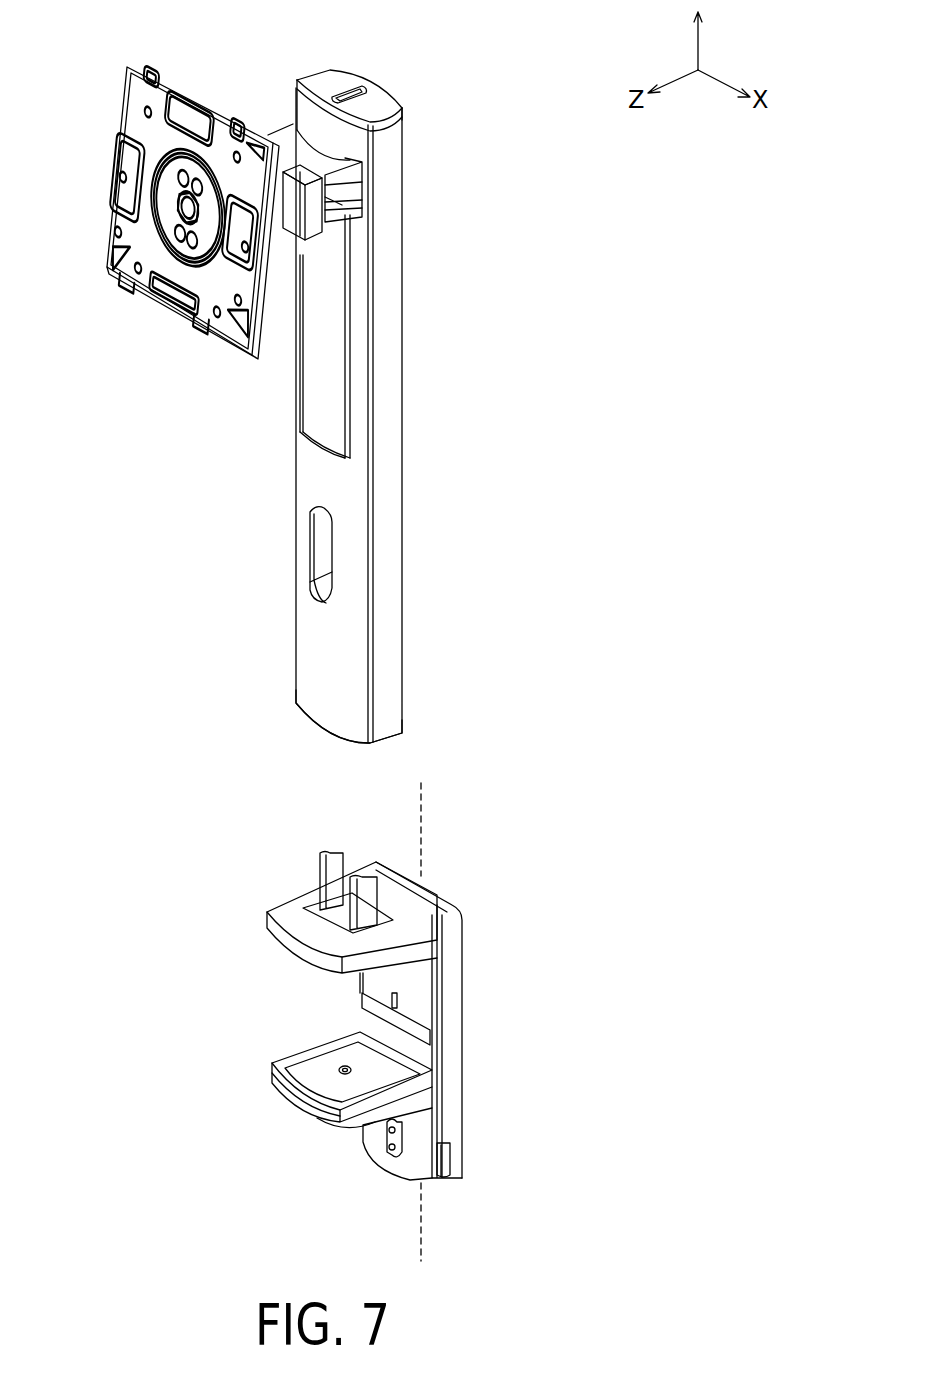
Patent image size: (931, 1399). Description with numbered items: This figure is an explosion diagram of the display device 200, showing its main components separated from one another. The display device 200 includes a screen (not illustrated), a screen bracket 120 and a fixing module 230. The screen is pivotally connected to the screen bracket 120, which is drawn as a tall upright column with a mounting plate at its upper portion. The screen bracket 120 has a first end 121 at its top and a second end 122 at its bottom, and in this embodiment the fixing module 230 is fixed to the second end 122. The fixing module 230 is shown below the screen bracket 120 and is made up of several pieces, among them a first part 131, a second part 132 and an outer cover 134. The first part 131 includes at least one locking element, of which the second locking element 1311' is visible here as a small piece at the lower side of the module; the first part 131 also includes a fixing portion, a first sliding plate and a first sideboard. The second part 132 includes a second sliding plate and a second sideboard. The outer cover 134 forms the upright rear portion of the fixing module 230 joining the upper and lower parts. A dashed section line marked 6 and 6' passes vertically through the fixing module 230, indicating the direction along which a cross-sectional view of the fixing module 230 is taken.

The display device 200 is at (388, 56).
The screen bracket 120 is at (388, 432).
The first end 121 is at (388, 135).
The second end 122 is at (388, 722).
The fixing module 230 is at (509, 924).
The second part 132 is at (281, 984).
The first part 131 is at (371, 1186).
The outer cover 134 is at (452, 1077).
The second locking element 1311' is at (491, 1160).
The direction 6-6' 6 is at (446, 829).
The direction 6- 6' is at (450, 1243).